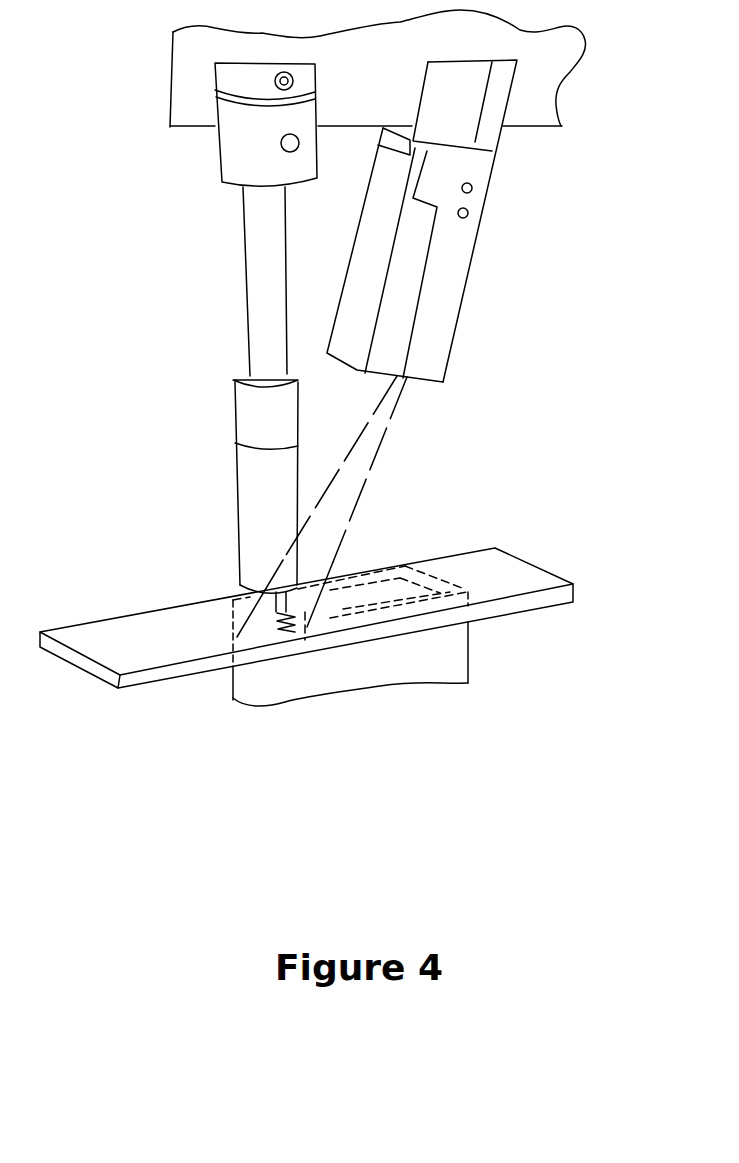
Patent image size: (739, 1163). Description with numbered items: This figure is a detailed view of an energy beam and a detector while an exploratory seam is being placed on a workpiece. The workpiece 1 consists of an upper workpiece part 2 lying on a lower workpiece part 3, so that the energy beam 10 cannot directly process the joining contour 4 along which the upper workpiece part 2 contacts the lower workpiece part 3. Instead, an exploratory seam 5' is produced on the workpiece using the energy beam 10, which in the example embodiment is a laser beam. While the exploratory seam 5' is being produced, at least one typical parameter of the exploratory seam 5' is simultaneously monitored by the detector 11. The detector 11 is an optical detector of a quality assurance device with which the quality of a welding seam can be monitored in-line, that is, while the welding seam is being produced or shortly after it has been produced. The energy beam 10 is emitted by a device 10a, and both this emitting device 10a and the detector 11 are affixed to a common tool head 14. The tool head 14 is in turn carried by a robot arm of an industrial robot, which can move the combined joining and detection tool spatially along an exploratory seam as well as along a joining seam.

The workpiece 1 is at (610, 698).
The upper workpiece part 2 is at (528, 580).
The lower workpiece part 3 is at (455, 657).
The joining contour 4 is at (453, 593).
The exploratory seam 5' is at (217, 671).
The energy beam 10 is at (243, 589).
The device which emits the energy beam 10a is at (235, 153).
The detector 11 is at (448, 287).
The tool head 14 is at (557, 68).